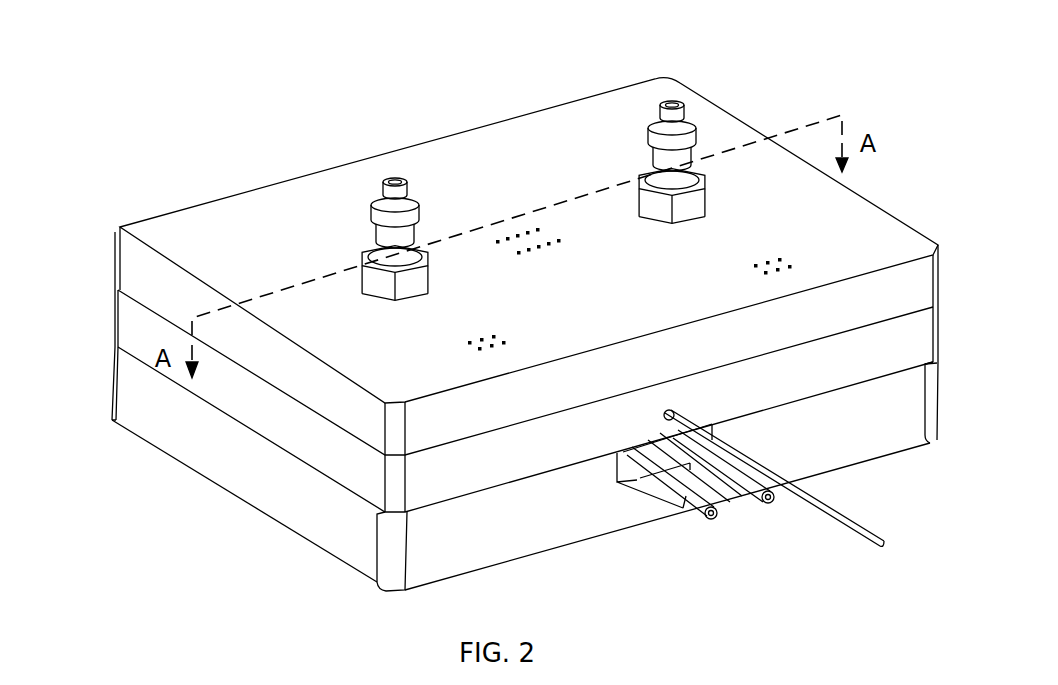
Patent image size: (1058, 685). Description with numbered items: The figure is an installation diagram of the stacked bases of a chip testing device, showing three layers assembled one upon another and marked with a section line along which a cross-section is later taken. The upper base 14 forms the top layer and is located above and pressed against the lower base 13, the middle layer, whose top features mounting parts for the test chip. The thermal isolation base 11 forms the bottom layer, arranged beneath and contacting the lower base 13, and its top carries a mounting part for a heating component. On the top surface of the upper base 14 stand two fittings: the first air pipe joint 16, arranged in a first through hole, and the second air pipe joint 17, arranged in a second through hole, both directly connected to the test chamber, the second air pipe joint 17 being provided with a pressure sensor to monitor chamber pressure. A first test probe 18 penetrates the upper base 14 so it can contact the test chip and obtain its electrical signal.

The thermal isolation base 11 is at (133, 413).
The lower base 13 is at (132, 337).
The upper base 14 is at (135, 280).
The first air pipe joint 16 is at (393, 207).
The second air pipe joint 17 is at (672, 135).
The first test probe 18 is at (523, 234).